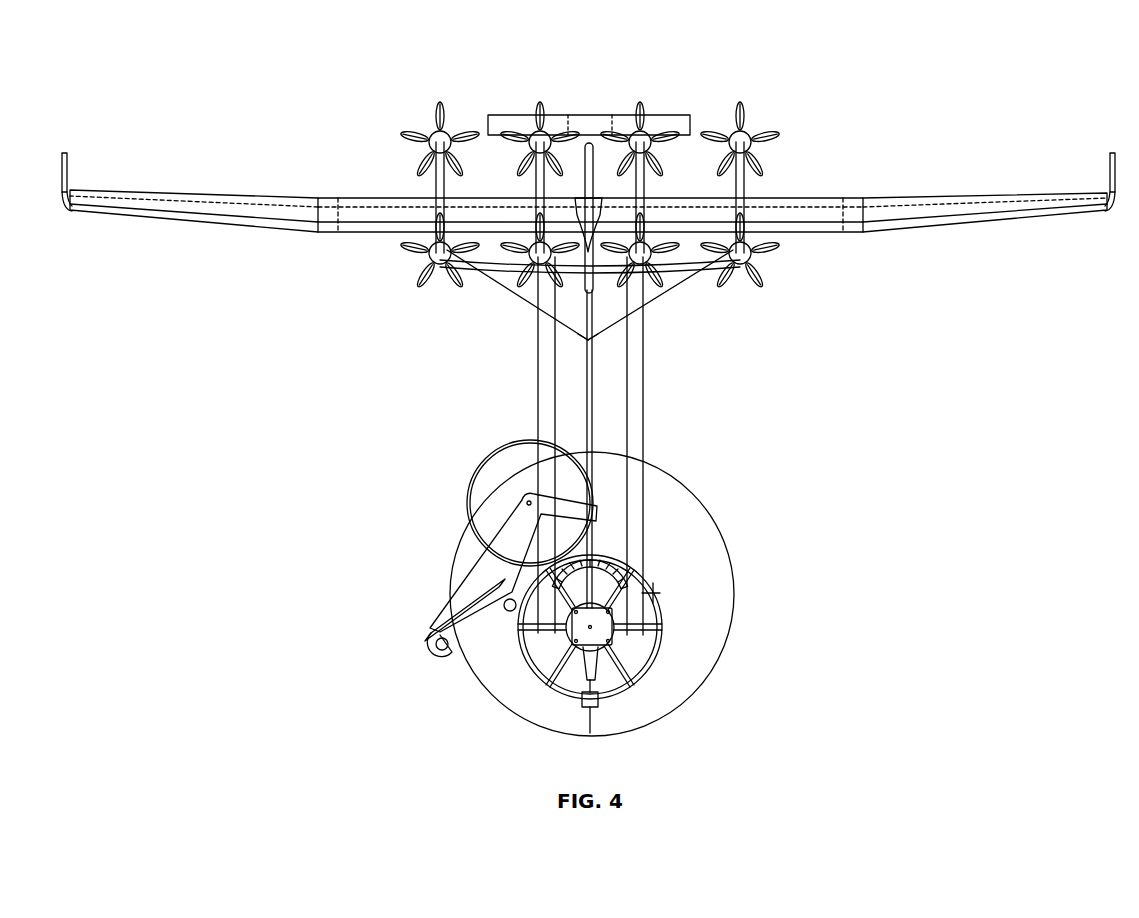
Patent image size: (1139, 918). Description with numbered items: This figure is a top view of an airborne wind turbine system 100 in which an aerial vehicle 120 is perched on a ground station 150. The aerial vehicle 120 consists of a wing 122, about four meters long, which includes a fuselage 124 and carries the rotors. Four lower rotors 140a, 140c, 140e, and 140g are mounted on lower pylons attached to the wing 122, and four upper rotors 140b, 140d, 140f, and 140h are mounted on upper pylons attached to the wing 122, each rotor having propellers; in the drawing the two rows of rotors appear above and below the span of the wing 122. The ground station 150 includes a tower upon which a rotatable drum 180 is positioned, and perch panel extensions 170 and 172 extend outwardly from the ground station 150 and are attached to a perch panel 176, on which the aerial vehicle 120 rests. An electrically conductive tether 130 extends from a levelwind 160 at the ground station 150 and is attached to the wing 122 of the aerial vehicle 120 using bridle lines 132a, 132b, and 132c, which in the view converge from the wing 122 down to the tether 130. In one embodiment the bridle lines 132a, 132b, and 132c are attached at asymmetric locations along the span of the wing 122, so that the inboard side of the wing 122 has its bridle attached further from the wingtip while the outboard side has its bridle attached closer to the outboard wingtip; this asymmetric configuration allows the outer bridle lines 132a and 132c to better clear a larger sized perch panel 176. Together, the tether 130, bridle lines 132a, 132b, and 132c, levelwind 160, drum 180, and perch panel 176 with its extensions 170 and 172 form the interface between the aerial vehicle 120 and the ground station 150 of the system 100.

The aircraft 100 is at (972, 388).
The aerial vehicle 120 is at (842, 133).
The wing 122 is at (810, 218).
The fuselage 124 is at (587, 133).
The electrically conductive tether 130 is at (600, 408).
The bridle line 132a is at (497, 281).
The bridle line 132b is at (605, 318).
The bridle line 132c is at (688, 273).
The lower rotor 140a is at (440, 264).
The upper rotor 140b is at (447, 134).
The lower rotor 140c is at (541, 268).
The upper rotor 140d is at (543, 130).
The lower rotor 140e is at (660, 267).
The upper rotor 140f is at (648, 133).
The lower rotor 140g is at (753, 258).
The propeller 140h is at (747, 130).
The ground station 150 is at (870, 661).
The levelwind 160 is at (483, 457).
The perch panel extension 170 is at (640, 378).
The perch panel extension 172 is at (540, 373).
The perch panel 176 is at (610, 267).
The rotatable drum 180 is at (657, 663).